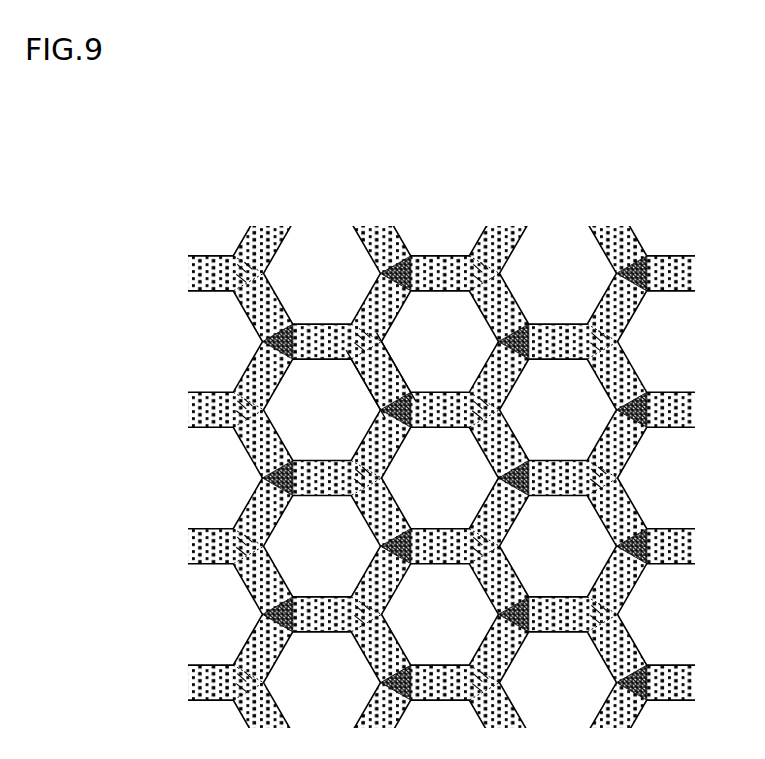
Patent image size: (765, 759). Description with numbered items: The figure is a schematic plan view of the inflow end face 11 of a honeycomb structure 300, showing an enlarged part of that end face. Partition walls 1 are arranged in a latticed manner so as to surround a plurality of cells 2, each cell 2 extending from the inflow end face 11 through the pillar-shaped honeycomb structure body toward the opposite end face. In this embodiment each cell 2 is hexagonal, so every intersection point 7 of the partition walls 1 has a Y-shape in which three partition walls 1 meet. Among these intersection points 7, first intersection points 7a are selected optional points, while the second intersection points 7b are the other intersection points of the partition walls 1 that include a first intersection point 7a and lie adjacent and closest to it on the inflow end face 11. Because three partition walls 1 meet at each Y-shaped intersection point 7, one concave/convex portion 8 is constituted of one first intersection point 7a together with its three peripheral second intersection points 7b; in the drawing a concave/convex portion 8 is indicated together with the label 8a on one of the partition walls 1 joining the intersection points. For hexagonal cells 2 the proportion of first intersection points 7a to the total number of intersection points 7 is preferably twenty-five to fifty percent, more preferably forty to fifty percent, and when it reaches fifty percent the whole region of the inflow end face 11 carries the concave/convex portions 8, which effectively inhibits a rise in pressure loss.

The honeycomb structure 300 is at (742, 134).
The inflow end face 11 is at (216, 145).
The partition wall 1 is at (483, 392).
The cell 2 is at (318, 407).
The intersection point 7 is at (377, 419).
The first intersection point 7a is at (405, 395).
The second intersection point 7b is at (395, 352).
The concave/convex portion 8 is at (434, 292).
The first linear portion 8a is at (413, 378).